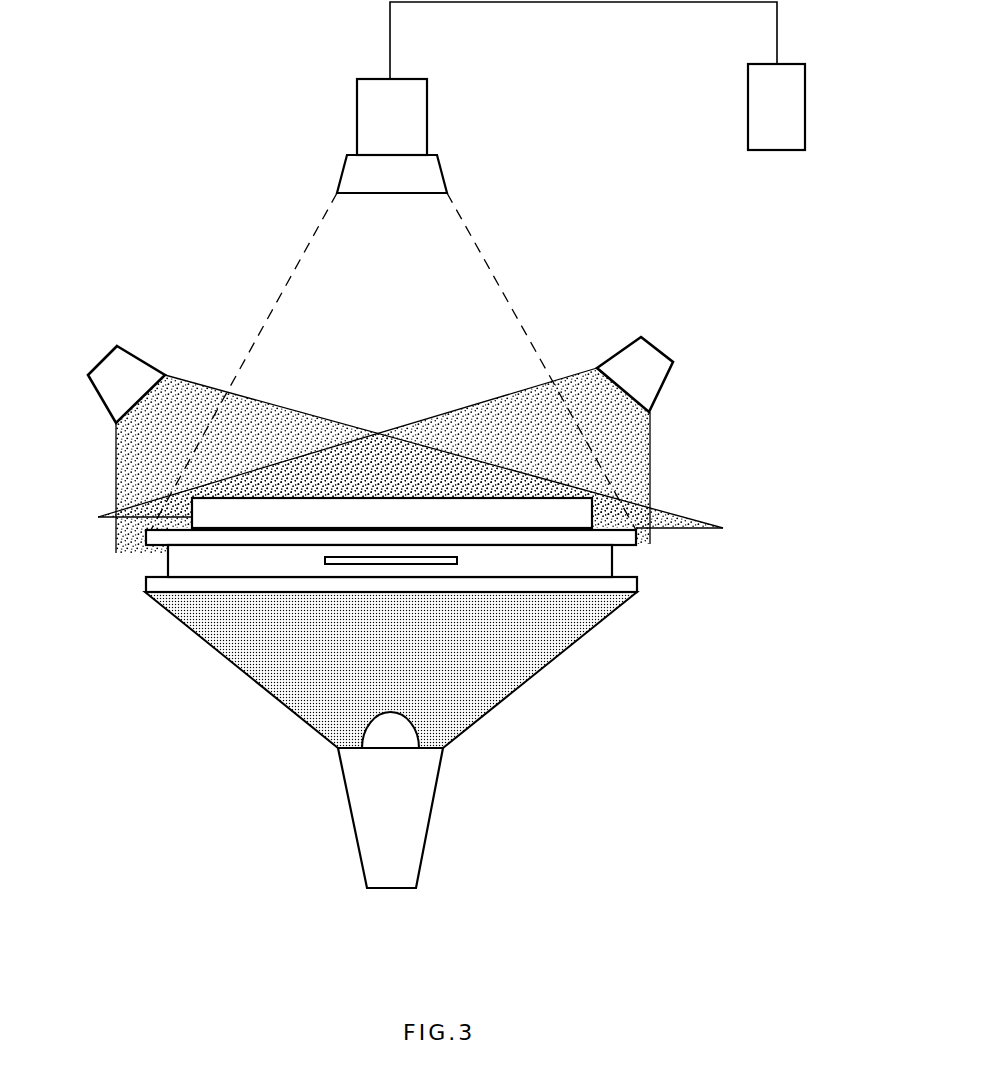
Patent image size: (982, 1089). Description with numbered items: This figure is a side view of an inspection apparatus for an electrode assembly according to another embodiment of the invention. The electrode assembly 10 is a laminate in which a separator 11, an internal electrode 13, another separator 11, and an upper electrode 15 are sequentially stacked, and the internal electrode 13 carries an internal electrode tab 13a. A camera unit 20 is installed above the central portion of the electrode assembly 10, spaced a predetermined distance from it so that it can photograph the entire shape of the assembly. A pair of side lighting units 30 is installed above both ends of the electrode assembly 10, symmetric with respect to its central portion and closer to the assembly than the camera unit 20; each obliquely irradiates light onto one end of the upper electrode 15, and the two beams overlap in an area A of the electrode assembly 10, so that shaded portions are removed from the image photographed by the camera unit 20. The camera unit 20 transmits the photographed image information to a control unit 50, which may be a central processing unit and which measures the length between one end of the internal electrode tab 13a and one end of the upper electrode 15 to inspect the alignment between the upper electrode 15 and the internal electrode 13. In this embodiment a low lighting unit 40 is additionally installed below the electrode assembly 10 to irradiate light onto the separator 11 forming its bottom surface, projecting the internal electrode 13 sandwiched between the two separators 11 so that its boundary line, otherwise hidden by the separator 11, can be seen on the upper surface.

The electrode assembly 10 is at (388, 639).
The separator 11 is at (146, 538).
The internal electrode 13 is at (438, 605).
The internal electrode tab 13a is at (445, 561).
The upper electrode 15 is at (577, 515).
The camera unit 20 is at (427, 116).
The side lighting unit 30 is at (117, 346).
The low lighting unit 40 is at (413, 820).
The control unit 50 is at (777, 150).
The area A is at (372, 453).